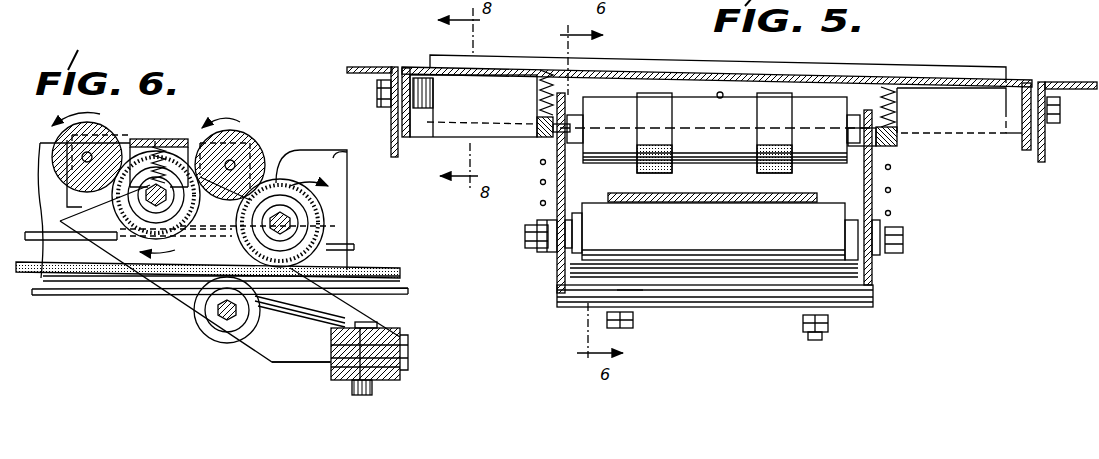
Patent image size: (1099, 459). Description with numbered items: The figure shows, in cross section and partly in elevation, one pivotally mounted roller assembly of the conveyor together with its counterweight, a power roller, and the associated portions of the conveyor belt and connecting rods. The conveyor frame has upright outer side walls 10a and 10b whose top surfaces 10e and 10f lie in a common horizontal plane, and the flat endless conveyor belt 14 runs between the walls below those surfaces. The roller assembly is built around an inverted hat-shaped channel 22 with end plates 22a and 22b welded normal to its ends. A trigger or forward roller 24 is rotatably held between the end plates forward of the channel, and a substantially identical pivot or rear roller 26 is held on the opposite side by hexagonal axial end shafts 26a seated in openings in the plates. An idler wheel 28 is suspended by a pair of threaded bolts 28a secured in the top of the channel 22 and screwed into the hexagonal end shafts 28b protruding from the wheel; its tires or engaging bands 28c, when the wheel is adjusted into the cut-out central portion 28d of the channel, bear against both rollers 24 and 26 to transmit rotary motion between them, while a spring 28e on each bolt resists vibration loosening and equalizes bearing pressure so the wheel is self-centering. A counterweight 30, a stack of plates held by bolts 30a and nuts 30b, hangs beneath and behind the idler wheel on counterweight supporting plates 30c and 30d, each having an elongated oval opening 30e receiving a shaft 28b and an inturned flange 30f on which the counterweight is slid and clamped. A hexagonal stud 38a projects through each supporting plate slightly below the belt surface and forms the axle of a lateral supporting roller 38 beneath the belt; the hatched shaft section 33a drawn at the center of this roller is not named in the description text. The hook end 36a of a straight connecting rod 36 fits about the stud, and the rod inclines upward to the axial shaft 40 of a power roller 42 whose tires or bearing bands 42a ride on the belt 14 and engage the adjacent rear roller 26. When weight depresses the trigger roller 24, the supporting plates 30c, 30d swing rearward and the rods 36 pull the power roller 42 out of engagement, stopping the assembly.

In FIG. 6, the outer side wall 10a is at (348, 172).
In FIG. 5, the outer side wall 10a is at (391, 146).
In FIG. 5, the outer side wall 10b is at (1041, 163).
In FIG. 5, the top surface 10e is at (392, 67).
In FIG. 5, the top surface 10f is at (1046, 84).
In FIG. 6, the conveyor belt 14 is at (369, 268).
In FIG. 5, the conveyor belt 14 is at (798, 194).
In FIG. 6, the channel 22 is at (174, 139).
In FIG. 5, the channel 22 is at (832, 79).
In FIG. 6, the end plate 22a is at (72, 190).
In FIG. 5, the end plate 22a is at (402, 121).
In FIG. 5, the end plate 22b is at (1031, 137).
In FIG. 6, the trigger or forward roller 24 is at (70, 133).
In FIG. 6, the pivot or rear roller 26 is at (258, 142).
In FIG. 5, the pivot or rear roller 26 is at (940, 72).
In FIG. 5, the hexagonal axial end shaft 26a is at (377, 94).
In FIG. 6, the idler wheel 28 is at (108, 244).
In FIG. 5, the idler wheel 28 is at (695, 152).
In FIG. 6, the threaded bolt 28a is at (160, 139).
In FIG. 5, the threaded bolt 28a is at (557, 135).
In FIG. 6, the hexagonal end shaft 28b is at (146, 212).
In FIG. 5, the hexagonal end shaft 28b is at (537, 128).
In FIG. 6, the tire or engaging band 28c is at (184, 236).
In FIG. 5, the tire or engaging band 28c is at (656, 102).
In FIG. 5, the cut-out central portion 28d is at (720, 92).
In FIG. 6, the spring 28e is at (168, 139).
In FIG. 5, the spring 28e is at (540, 103).
In FIG. 6, the counterweight 30 is at (400, 352).
In FIG. 5, the counterweight 30 is at (630, 330).
In FIG. 6, the bolt 30a is at (380, 325).
In FIG. 5, the bolt 30a is at (633, 314).
In FIG. 6, the nut 30b is at (374, 390).
In FIG. 5, the nut 30b is at (812, 340).
In FIG. 5, the counterweight supporting plate 30c is at (557, 192).
In FIG. 6, the counterweight supporting plate 30d is at (183, 304).
In FIG. 5, the counterweight supporting plate 30d is at (872, 200).
In FIG. 5, the elongated oval opening 30e is at (540, 164).
In FIG. 6, the inturned flange 30f is at (282, 364).
In FIG. 5, the inturned flange 30f is at (567, 307).
In FIG. 6, the roller shaft 33a is at (220, 314).
In FIG. 6, the connecting rod 36 is at (32, 230).
In FIG. 5, the connecting rod 36 is at (543, 205).
In FIG. 5, the hook end 36a is at (540, 252).
In FIG. 6, the lateral supporting roller 38 is at (222, 343).
In FIG. 5, the lateral supporting roller 38 is at (711, 240).
In FIG. 5, the hexagonal stud 38a is at (525, 239).
In FIG. 6, the axial shaft 40 is at (325, 222).
In FIG. 6, the power roller 42 is at (292, 224).
In FIG. 6, the tire or bearing band 42a is at (282, 180).